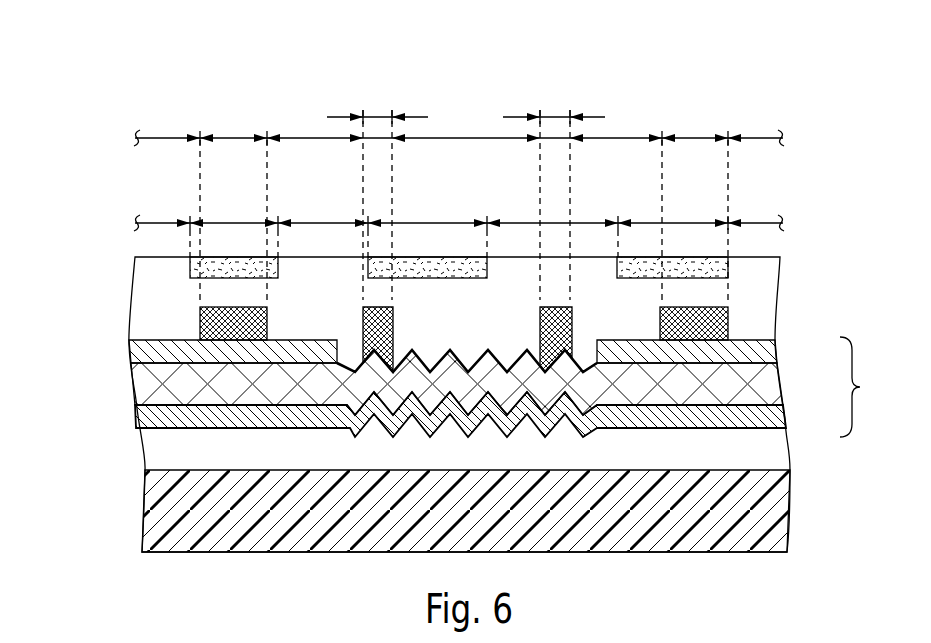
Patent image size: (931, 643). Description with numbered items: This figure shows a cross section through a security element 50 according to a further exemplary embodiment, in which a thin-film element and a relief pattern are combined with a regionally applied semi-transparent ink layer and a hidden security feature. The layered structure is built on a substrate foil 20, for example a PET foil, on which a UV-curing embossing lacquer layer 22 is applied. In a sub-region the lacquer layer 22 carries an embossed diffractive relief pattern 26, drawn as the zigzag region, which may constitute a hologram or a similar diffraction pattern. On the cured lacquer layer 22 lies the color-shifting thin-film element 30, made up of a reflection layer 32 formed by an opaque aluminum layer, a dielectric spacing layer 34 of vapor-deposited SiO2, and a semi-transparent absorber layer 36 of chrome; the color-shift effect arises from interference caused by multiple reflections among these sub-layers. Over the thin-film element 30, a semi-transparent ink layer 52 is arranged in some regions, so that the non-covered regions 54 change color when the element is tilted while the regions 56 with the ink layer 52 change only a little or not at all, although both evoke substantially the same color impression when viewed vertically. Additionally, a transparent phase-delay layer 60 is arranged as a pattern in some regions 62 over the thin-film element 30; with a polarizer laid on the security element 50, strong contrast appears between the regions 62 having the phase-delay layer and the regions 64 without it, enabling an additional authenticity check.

The substrate foil 20 is at (760, 503).
The embossing lacquer layer 22 is at (765, 449).
The diffractive relief pattern 26 is at (381, 427).
The thin-film element 30 is at (897, 398).
The reflection layer 32 is at (760, 413).
The dielectric spacing layer 34 is at (758, 380).
The semi-transparent absorber layer 36 is at (758, 350).
The security element 50 is at (109, 237).
The semi-transparent ink layer 52 is at (210, 322).
The non-covered regions 54 is at (159, 134).
The regions covered by the ink layer 56 is at (232, 134).
The transparent phase-delay layer 60 is at (732, 261).
The regions having the phase-delay layer 62 is at (231, 219).
The regions without a phase-delay layer 64 is at (153, 219).